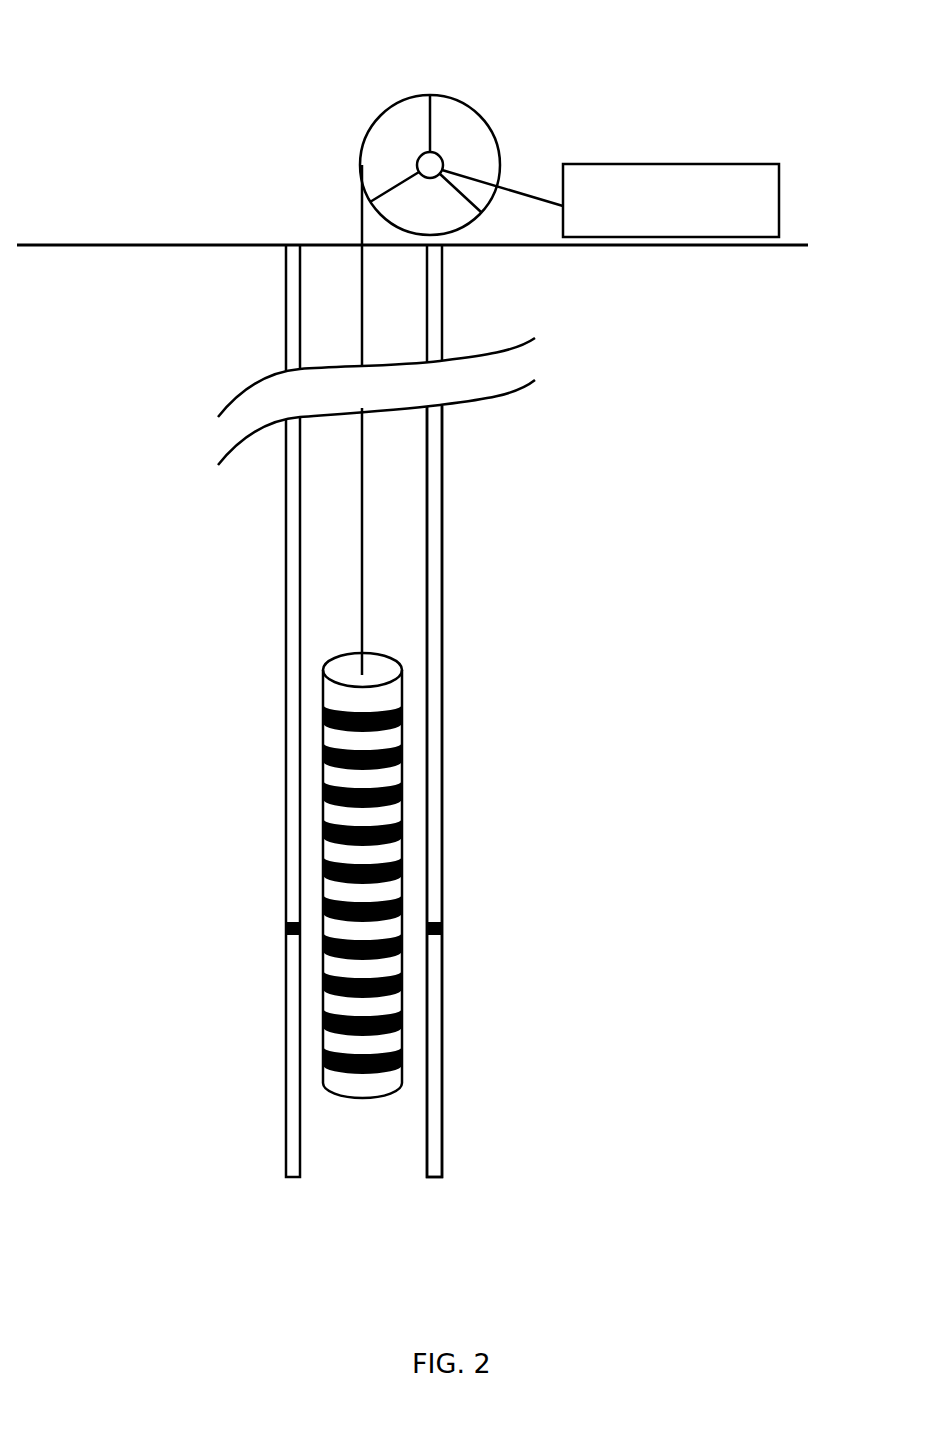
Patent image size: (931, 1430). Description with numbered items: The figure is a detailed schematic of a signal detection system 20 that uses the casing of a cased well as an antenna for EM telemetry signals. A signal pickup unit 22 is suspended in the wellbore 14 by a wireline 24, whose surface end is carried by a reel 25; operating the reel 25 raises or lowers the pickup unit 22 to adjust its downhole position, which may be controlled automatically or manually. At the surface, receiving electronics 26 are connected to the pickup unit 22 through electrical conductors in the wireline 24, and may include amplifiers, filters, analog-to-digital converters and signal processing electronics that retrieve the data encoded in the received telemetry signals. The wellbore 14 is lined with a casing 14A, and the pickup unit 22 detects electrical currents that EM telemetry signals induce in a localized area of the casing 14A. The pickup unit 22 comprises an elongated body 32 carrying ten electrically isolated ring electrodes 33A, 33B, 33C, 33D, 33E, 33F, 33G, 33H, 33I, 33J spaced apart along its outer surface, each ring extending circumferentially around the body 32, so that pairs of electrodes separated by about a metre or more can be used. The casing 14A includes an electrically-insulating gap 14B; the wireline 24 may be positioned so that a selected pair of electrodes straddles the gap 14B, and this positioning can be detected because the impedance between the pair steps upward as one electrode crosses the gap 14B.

The signal detection system 20 is at (158, 81).
The reel 25 is at (497, 138).
The receiving electronics 26 is at (663, 164).
The wellbore 14 is at (393, 332).
The casing 14A is at (442, 477).
The electrically-insulating gap 14B is at (285, 925).
The wireline 24 is at (363, 602).
The signal pickup unit 22 is at (335, 810).
The elongated body 32 is at (380, 667).
The electrode 33A is at (402, 712).
The electrode 33B is at (402, 750).
The electrode 33C is at (402, 788).
The electrode 33D is at (402, 826).
The electrode 33E is at (402, 864).
The electrode 33F is at (402, 902).
The electrode 33G is at (402, 940).
The electrode 33H is at (402, 978).
The electrode 33I is at (402, 1016).
The electrode 33J is at (402, 1054).